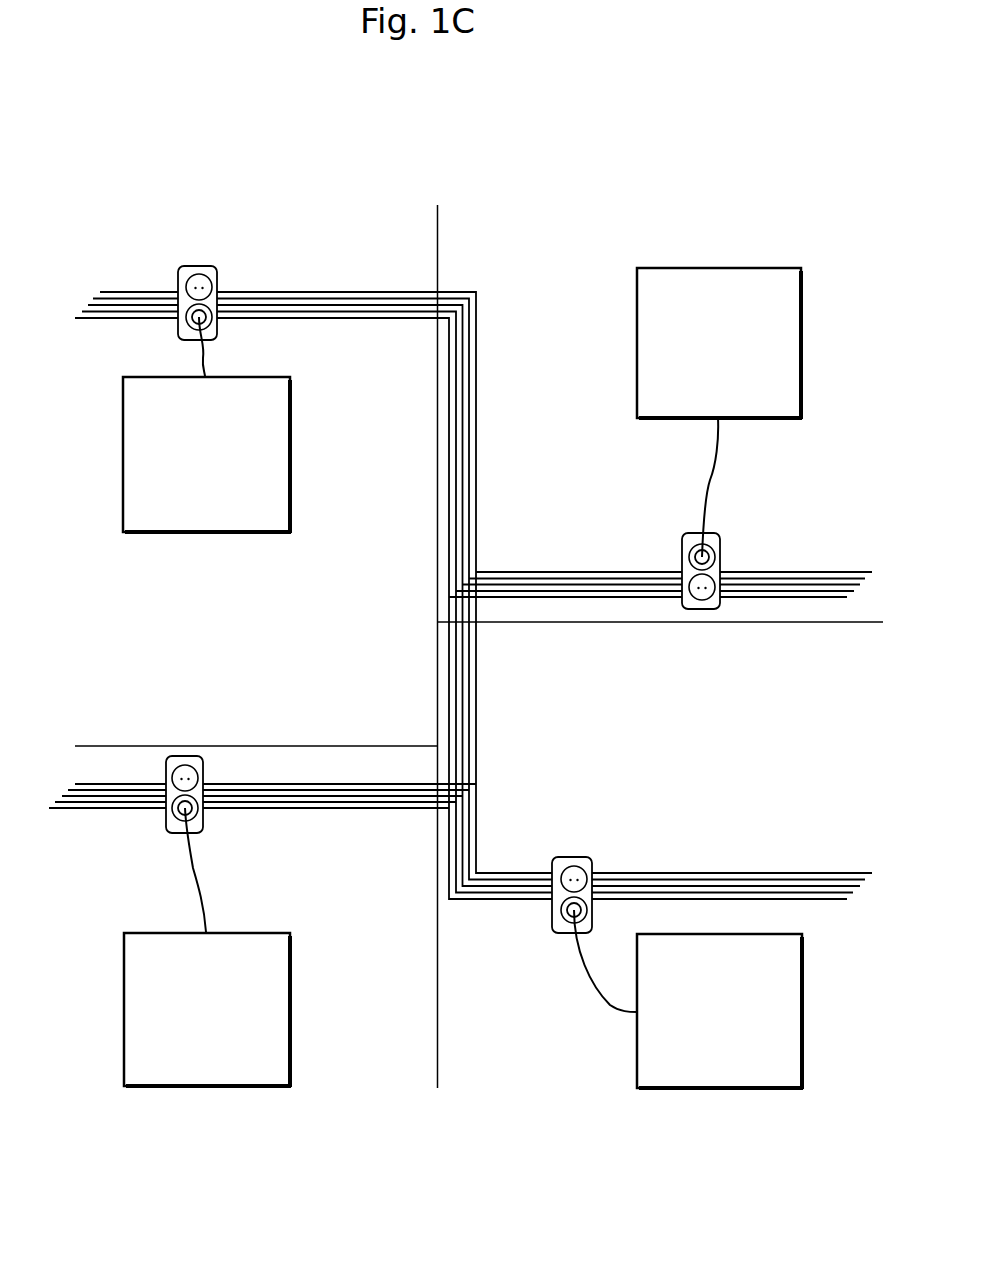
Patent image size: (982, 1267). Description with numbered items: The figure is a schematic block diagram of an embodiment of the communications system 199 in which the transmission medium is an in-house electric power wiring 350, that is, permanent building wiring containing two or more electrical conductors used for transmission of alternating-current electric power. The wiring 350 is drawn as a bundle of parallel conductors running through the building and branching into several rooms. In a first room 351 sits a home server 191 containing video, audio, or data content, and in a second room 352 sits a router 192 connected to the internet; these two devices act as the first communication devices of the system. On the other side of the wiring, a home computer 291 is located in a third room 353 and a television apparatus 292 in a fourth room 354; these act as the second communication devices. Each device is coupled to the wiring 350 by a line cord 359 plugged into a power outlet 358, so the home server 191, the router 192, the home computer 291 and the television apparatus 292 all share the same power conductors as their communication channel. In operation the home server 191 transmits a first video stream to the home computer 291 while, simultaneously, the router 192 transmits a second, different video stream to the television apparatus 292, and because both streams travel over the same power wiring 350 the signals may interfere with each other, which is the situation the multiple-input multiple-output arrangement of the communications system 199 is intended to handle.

The communications system 199 is at (591, 252).
The in-house electric power wiring 350 is at (287, 290).
The first room 351 is at (409, 724).
The second room 352 is at (409, 847).
The third room 353 is at (534, 559).
The fourth room 354 is at (534, 661).
The power outlets 358 is at (197, 256).
The line cords 359 is at (187, 873).
The home server 191 is at (183, 447).
The router 192 is at (183, 1003).
The home computer 291 is at (694, 337).
The television apparatus 292 is at (695, 1002).